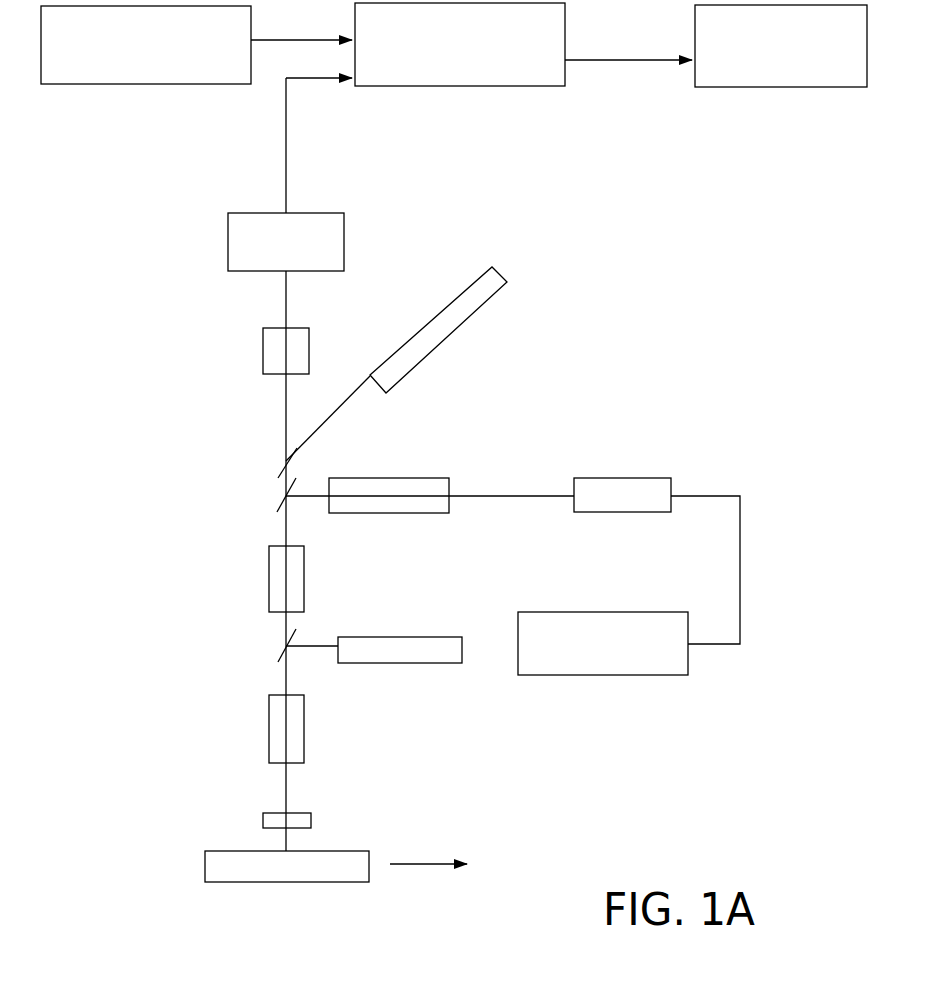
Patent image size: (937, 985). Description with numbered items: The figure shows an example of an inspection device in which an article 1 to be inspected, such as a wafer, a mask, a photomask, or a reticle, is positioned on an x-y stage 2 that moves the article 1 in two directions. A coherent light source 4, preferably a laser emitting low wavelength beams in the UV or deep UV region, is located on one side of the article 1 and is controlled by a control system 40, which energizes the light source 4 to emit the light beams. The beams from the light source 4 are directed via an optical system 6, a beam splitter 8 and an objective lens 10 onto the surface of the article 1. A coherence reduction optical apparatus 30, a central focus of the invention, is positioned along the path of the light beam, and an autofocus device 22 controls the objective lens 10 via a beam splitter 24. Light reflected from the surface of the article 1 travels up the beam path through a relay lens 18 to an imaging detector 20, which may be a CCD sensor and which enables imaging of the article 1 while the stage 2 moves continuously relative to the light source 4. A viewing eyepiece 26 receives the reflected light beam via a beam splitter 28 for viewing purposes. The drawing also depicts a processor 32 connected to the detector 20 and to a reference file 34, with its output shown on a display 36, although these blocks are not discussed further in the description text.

The article 1 is at (263, 815).
The x-y stage 2 is at (252, 878).
The coherent light source 4 is at (627, 494).
The optical system 6 is at (405, 478).
The beam splitter 8 is at (285, 496).
The objective lens 10 is at (304, 723).
The relay lens 18 is at (265, 347).
The imaging detector 20 is at (250, 245).
The autofocus device 22 is at (398, 650).
The beam splitter 24 is at (283, 646).
The viewing eyepiece 26 is at (500, 275).
The beam splitter 28 is at (285, 460).
The coherence reduction optical apparatus 30 is at (269, 562).
The processor 32 is at (459, 88).
The reference file 34 is at (106, 85).
The display 36 is at (763, 88).
The control system 40 is at (603, 676).